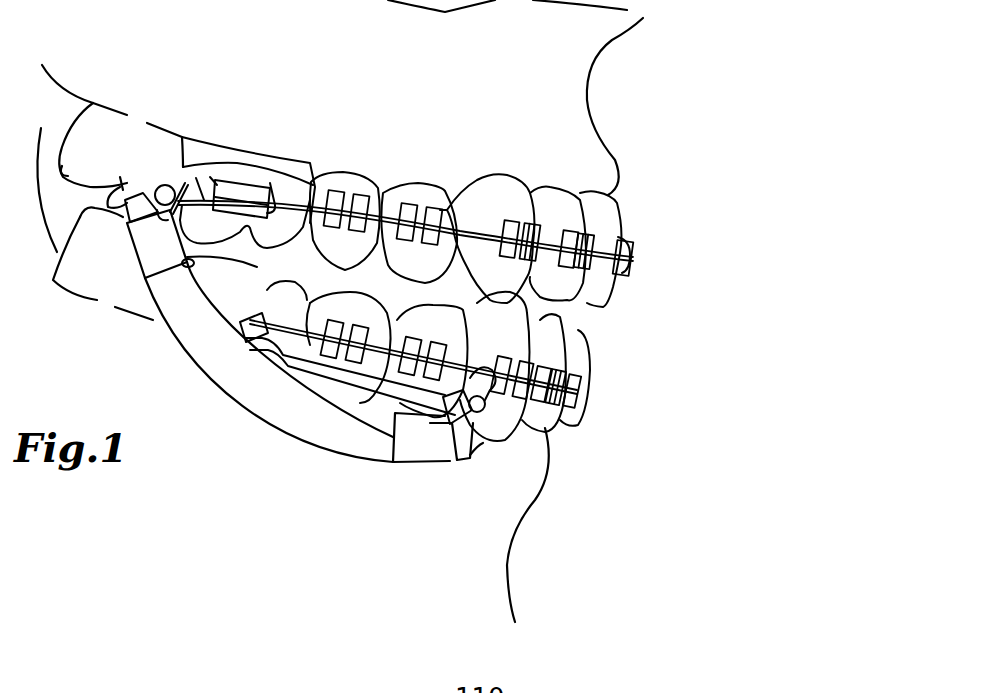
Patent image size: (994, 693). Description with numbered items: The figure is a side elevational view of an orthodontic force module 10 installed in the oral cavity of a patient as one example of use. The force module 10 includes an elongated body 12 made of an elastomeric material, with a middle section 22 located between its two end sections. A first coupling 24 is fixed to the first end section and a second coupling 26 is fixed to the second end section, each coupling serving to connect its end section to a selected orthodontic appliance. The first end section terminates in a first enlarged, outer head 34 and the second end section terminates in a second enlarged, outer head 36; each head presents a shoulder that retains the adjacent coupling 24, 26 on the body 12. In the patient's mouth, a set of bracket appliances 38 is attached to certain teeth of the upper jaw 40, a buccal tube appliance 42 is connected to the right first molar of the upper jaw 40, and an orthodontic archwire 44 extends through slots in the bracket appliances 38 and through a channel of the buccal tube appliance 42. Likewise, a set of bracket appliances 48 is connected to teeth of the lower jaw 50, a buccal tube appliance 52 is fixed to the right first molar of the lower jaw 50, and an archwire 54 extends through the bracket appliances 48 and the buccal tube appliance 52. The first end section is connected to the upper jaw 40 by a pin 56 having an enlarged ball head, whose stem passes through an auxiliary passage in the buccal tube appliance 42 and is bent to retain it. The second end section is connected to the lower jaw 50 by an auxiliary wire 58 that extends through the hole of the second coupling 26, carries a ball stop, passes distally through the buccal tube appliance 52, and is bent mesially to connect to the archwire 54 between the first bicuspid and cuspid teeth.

The orthodontic force module 10 is at (205, 423).
The elongated body 12 is at (270, 430).
The middle section 22 is at (197, 350).
The first coupling 24 is at (147, 253).
The second coupling 26 is at (408, 458).
The first enlarged, outer head 34 is at (135, 200).
The second enlarged, outer head 36 is at (455, 458).
The bracket appliances 38 is at (430, 210).
The upper jaw 40 is at (575, 105).
The buccal tube appliance 42 is at (247, 193).
The orthodontic archwire 44 is at (483, 207).
The bracket appliances 48 is at (403, 368).
The lower jaw 50 is at (483, 570).
The buccal tube appliance 52 is at (250, 318).
The archwire 54 is at (312, 290).
The pin 56 is at (198, 197).
The auxiliary wire 58 is at (328, 376).